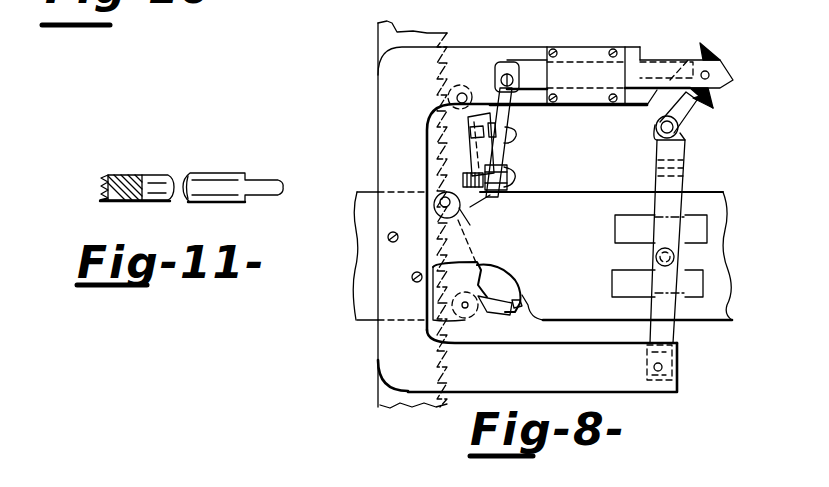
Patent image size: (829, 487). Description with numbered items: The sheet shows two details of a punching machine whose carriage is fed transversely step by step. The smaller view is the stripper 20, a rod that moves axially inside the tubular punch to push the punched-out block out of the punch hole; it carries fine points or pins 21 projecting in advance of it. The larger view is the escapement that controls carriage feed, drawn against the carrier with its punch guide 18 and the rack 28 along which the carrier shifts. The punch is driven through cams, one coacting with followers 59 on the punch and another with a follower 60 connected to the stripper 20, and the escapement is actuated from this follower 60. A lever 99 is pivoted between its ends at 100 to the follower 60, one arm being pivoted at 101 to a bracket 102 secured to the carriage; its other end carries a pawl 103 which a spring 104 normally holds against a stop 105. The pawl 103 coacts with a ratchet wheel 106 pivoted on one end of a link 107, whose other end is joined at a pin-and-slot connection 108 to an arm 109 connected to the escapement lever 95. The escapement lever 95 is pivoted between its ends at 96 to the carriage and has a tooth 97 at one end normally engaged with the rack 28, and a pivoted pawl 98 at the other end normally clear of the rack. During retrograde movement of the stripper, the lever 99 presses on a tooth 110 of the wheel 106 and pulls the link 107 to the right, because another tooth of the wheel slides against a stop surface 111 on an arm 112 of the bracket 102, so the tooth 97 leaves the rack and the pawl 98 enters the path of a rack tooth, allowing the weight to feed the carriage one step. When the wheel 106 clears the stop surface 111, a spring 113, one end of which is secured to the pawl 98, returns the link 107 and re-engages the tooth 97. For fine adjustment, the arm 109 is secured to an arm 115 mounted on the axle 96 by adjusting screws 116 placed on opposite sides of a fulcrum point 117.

In FIG. 8, the guide 18 is at (358, 304).
In FIG. 8, the rack 28 is at (388, 397).
In FIG. 8, the tooth 97 is at (447, 85).
In FIG. 8, the pin-and-slot connection 108 is at (505, 70).
In FIG. 8, the arm 112 is at (543, 46).
In FIG. 8, the stop surface 111 is at (662, 86).
In FIG. 8, the ratchet wheel 106 is at (717, 55).
In FIG. 8, the link 107 is at (735, 81).
In FIG. 8, the tooth 110 is at (712, 100).
In FIG. 8, the pawl 103 is at (703, 110).
In FIG. 8, the spring 104 is at (680, 125).
In FIG. 8, the stop 105 is at (655, 120).
In FIG. 8, the lever 99 is at (660, 190).
In FIG. 8, the pivot 100 is at (676, 252).
In FIG. 8, the follower 60 is at (690, 256).
In FIG. 8, the followers 59 is at (733, 290).
In FIG. 8, the pivot 101 is at (672, 366).
In FIG. 8, the bracket 102 is at (628, 387).
In FIG. 8, the adjusting screws 116 is at (513, 128).
In FIG. 8, the arm 109 is at (510, 140).
In FIG. 8, the fulcrum point 117 is at (510, 161).
In FIG. 8, the arm 115 is at (505, 175).
In FIG. 8, the pivot 96 is at (457, 207).
In FIG. 8, the escapement lever 95 is at (483, 269).
In FIG. 8, the pawl 98 is at (487, 308).
In FIG. 8, the spring 113 is at (522, 293).
In FIG. 11, the pins 21 is at (108, 176).
In FIG. 11, the stripper 20 is at (157, 182).